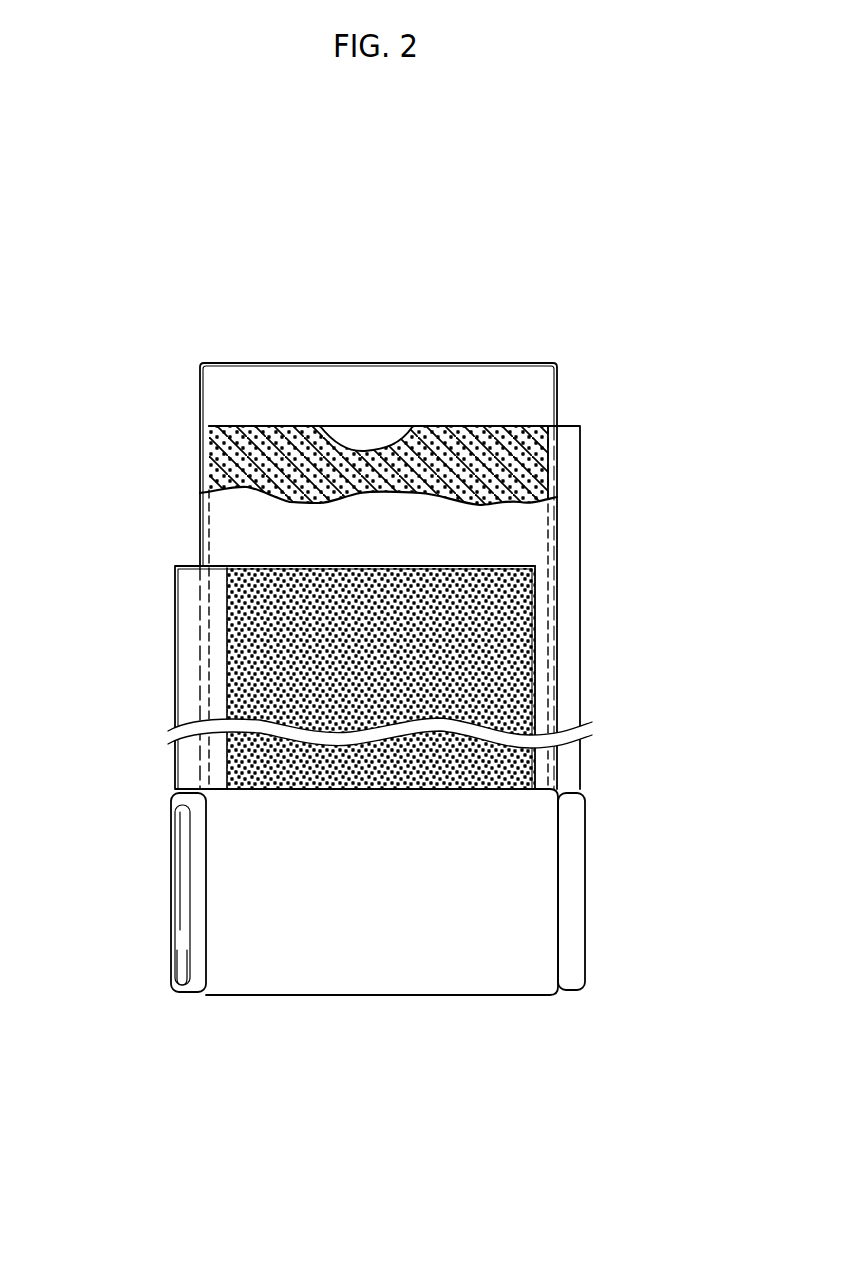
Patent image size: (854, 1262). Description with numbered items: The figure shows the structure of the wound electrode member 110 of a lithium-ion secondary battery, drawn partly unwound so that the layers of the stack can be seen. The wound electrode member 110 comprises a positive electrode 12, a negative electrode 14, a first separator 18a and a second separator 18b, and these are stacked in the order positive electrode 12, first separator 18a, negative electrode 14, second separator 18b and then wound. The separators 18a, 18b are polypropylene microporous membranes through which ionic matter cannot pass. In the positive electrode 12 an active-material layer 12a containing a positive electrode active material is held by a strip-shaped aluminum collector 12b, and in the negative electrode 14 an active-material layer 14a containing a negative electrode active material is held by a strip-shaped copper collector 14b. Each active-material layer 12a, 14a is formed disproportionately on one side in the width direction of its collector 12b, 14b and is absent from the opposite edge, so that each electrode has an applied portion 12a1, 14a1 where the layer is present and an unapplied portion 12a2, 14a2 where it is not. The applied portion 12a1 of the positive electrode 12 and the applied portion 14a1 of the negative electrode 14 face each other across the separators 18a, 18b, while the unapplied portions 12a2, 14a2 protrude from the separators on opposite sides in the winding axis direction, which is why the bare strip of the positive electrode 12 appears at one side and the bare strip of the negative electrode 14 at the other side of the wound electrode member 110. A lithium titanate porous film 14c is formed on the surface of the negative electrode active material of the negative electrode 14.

The positive electrode 12 is at (176, 622).
The active-material layer 12a is at (527, 634).
The applied portion 12a1 is at (276, 673).
The unapplied portion 12a2 is at (191, 704).
The collector 12b is at (354, 565).
The negative electrode 14 is at (584, 437).
The active-material layer 14a is at (430, 556).
The applied portion 14a1 is at (501, 447).
The unapplied portion 14a2 is at (567, 494).
The collector 14b is at (363, 428).
The lithium titanate porous film 14c is at (453, 433).
The first separator 18a is at (214, 542).
The second separator 18b is at (217, 393).
The wound electrode member 110 is at (415, 978).